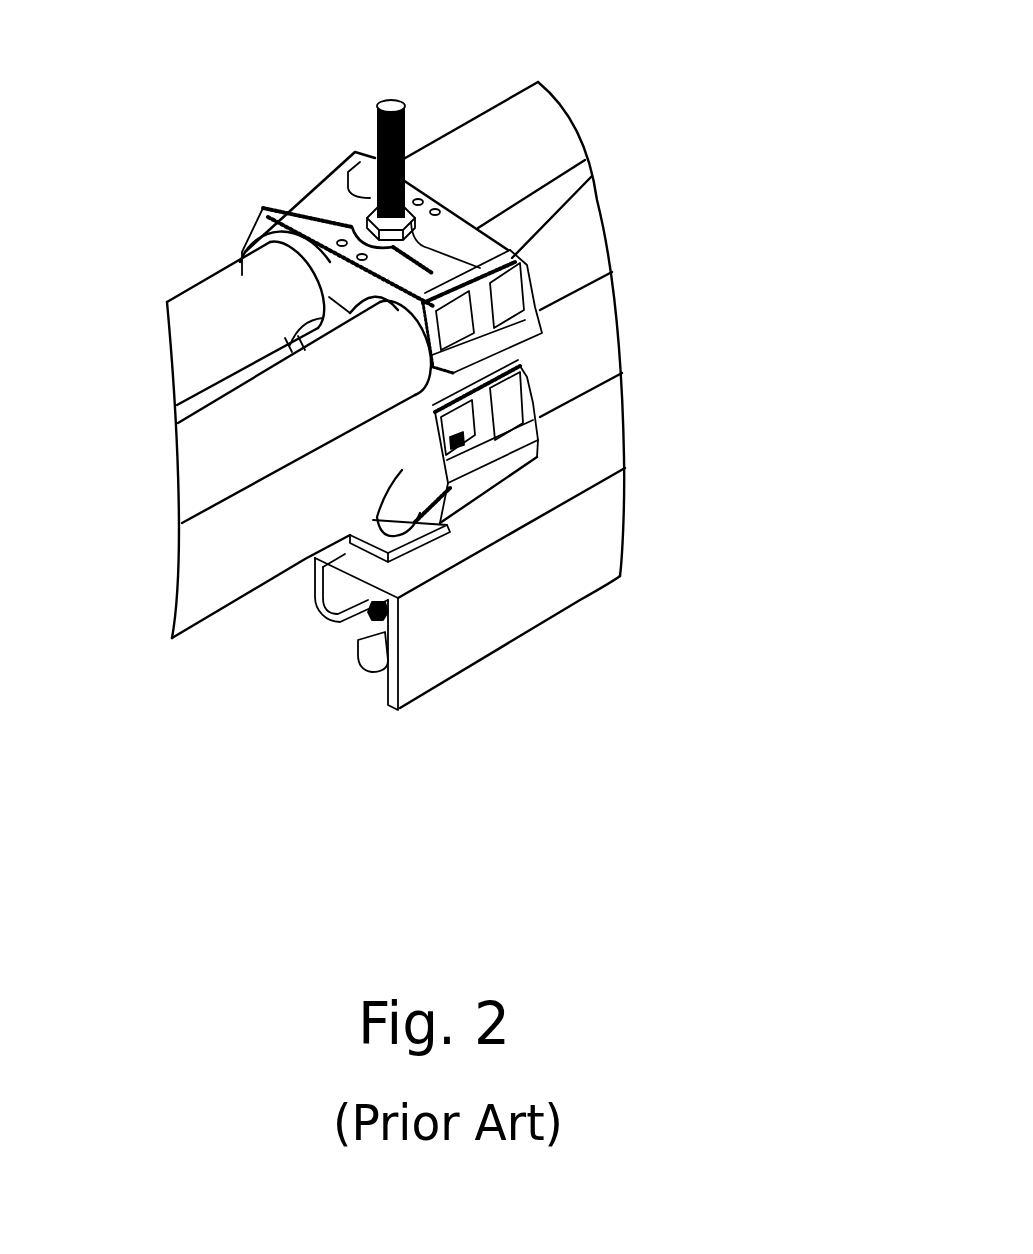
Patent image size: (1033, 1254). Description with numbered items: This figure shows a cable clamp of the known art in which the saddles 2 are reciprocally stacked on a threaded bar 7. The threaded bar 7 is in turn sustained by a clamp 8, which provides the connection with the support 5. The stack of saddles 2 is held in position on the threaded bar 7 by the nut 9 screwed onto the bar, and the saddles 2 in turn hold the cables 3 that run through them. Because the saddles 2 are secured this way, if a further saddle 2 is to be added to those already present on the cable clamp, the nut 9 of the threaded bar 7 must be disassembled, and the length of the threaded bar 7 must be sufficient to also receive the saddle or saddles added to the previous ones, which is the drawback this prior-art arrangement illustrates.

The saddle 2 is at (503, 277).
The pipe 3 is at (567, 268).
The support 5 is at (500, 573).
The threaded bar 7 is at (390, 107).
The clamp 8 is at (415, 540).
The nut 9 is at (366, 217).